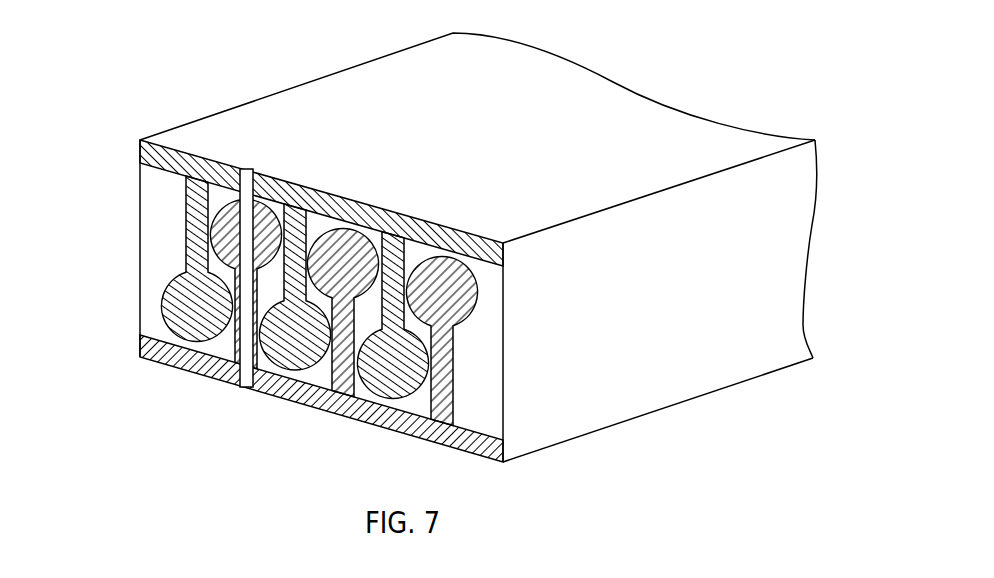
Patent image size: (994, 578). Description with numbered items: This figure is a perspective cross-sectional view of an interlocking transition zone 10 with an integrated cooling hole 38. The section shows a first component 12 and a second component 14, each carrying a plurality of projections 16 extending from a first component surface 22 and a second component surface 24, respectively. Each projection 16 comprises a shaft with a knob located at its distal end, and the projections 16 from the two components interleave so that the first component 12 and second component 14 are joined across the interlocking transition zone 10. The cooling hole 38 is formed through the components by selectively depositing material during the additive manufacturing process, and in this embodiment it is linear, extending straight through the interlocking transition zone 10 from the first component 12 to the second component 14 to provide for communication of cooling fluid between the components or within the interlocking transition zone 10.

The interlocking transition zone 10 is at (754, 72).
The first component 12 is at (388, 419).
The second component 14 is at (441, 242).
The projection 16 is at (464, 291).
The first component surface 22 is at (155, 338).
The second component surface 24 is at (153, 168).
The cooling hole 38 is at (245, 183).